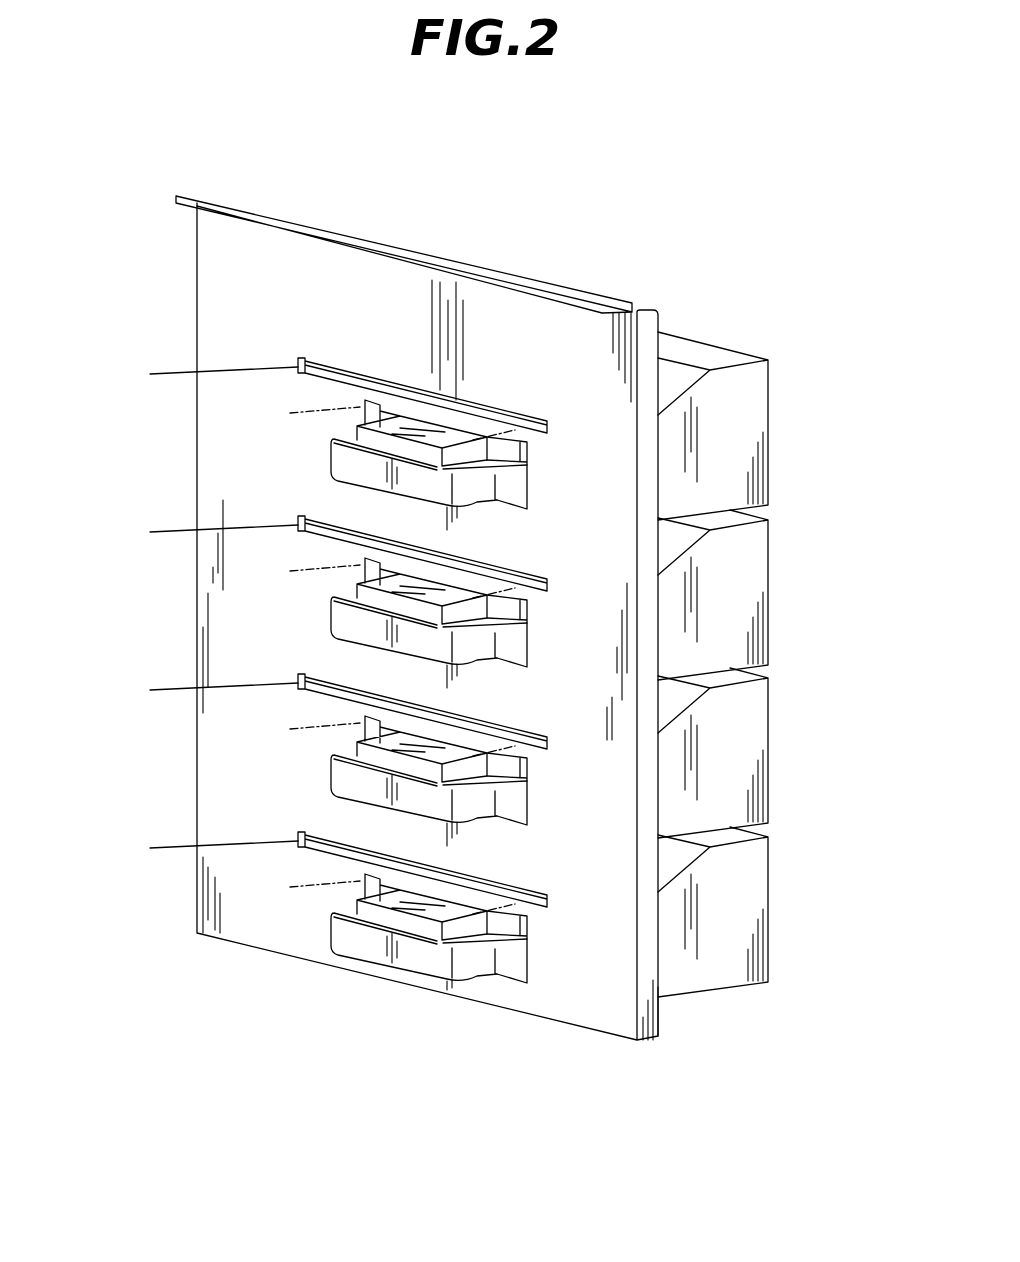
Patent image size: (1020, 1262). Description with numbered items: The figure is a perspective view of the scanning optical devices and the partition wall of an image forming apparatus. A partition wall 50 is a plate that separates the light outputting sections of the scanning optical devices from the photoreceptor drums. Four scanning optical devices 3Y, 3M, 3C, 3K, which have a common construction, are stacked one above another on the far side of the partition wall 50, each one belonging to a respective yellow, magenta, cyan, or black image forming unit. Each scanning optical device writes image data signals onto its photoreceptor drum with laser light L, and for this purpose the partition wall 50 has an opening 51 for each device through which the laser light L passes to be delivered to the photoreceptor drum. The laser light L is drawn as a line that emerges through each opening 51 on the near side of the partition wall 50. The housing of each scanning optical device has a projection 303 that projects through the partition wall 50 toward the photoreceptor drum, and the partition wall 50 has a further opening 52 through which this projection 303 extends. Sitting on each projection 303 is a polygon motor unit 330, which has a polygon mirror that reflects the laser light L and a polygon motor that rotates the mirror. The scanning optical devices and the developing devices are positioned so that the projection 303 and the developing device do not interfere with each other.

The partition wall 50 is at (378, 240).
The opening 51 is at (307, 362).
The opening 52 is at (530, 489).
The polygon motor unit 330 is at (393, 443).
The projection 303 is at (424, 481).
The scanning optical device 3Y is at (759, 416).
The scanning optical device 3M is at (759, 577).
The scanning optical device 3C is at (759, 739).
The scanning optical device 3K is at (759, 899).
The laser light L is at (172, 371).